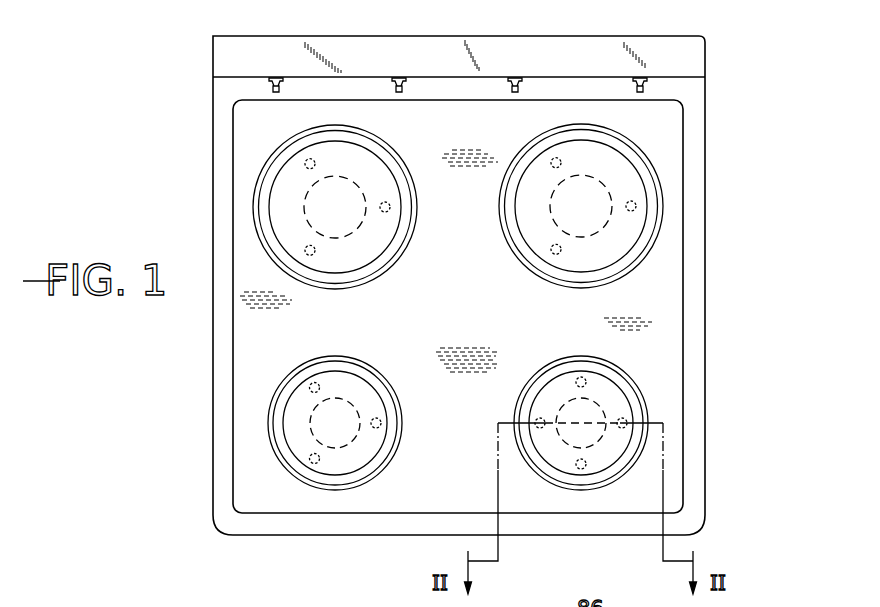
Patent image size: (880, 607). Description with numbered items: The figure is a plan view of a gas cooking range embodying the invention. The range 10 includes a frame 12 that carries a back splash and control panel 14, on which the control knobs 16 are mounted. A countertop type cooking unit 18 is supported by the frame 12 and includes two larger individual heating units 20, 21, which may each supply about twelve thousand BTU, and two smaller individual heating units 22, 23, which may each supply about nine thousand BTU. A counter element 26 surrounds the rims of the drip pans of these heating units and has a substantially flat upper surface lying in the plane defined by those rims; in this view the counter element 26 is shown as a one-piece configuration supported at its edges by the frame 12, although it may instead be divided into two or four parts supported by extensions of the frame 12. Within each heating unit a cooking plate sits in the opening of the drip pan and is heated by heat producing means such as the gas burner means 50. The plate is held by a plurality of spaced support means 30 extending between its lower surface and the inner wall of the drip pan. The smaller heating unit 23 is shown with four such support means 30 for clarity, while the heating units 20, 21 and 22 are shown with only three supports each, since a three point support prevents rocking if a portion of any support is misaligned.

The range 10 is at (710, 386).
The frame 12 is at (700, 263).
The back splash and control panel 14 is at (689, 78).
The control knobs 16 is at (506, 88).
The countertop type cooking unit 18 is at (468, 337).
The larger individual heating unit 20 is at (257, 170).
The larger individual heating unit 21 is at (518, 140).
The smaller individual heating unit 22 is at (267, 410).
The smaller individual heating unit 23 is at (512, 408).
The counter element 26 is at (668, 312).
The support means 30 is at (550, 250).
The gas burner means 50 is at (572, 398).